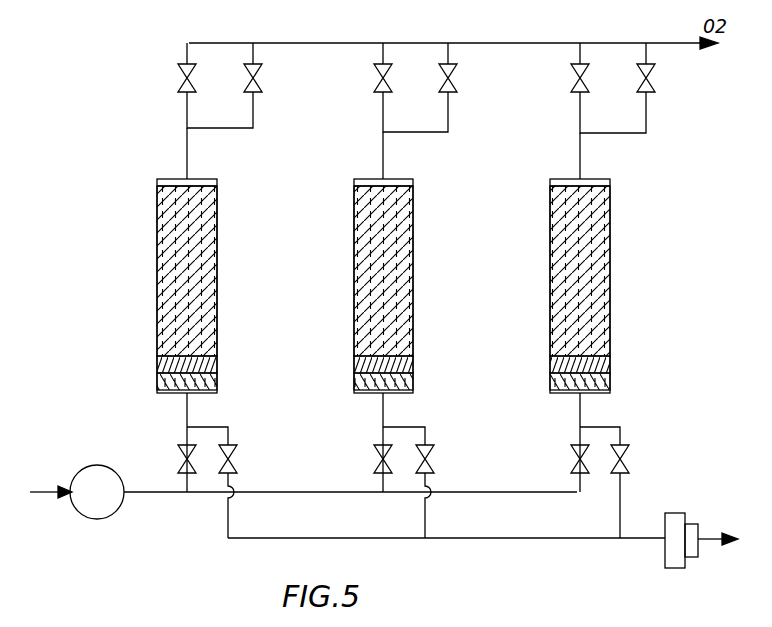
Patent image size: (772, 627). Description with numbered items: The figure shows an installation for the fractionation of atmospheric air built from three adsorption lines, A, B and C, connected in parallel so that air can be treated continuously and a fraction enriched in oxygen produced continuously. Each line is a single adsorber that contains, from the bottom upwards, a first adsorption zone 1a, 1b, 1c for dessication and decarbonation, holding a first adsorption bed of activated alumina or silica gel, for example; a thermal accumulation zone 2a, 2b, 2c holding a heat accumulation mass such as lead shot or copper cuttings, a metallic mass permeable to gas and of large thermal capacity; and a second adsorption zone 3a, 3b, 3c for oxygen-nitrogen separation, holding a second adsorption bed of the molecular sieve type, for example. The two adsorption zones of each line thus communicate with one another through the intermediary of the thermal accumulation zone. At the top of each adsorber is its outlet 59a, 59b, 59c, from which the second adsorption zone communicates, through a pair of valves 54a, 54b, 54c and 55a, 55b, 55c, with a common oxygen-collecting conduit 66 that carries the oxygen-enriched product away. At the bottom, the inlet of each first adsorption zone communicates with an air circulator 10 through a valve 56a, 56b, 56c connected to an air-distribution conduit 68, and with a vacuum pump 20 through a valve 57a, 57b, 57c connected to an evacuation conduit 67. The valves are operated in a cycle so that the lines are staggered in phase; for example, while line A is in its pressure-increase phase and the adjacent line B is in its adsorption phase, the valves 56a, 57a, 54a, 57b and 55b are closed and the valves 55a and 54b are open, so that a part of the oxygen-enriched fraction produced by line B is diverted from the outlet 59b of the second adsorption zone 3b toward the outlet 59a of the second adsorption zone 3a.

The air circulator 10 is at (98, 466).
The vacuum pump 20 is at (684, 520).
The oxygen-collecting conduit 66 is at (333, 43).
The evacuation conduit 67 is at (470, 540).
The air-distribution conduit 68 is at (351, 494).
The first adsorption zone 1a is at (158, 378).
The first adsorption zone 1b is at (355, 380).
The first adsorption zone 1c is at (552, 382).
The thermal accumulation zone 2a is at (215, 365).
The thermal accumulation zone 2b is at (412, 368).
The thermal accumulation zone 2c is at (610, 366).
The second adsorption zone 3a is at (205, 307).
The second adsorption zone 3b is at (405, 312).
The second adsorption zone 3c is at (600, 308).
The outlet 59a is at (187, 277).
The outlet 59b is at (395, 279).
The outlet 59c is at (589, 279).
The valve 54a is at (179, 66).
The valve 54b is at (376, 68).
The valve 54c is at (573, 68).
The valve 55a is at (246, 79).
The valve 55b is at (485, 80).
The valve 55c is at (688, 80).
The valve 56a is at (178, 464).
The valve 56b is at (374, 464).
The valve 56c is at (571, 466).
The valve 57a is at (236, 462).
The valve 57b is at (433, 466).
The valve 57c is at (630, 470).